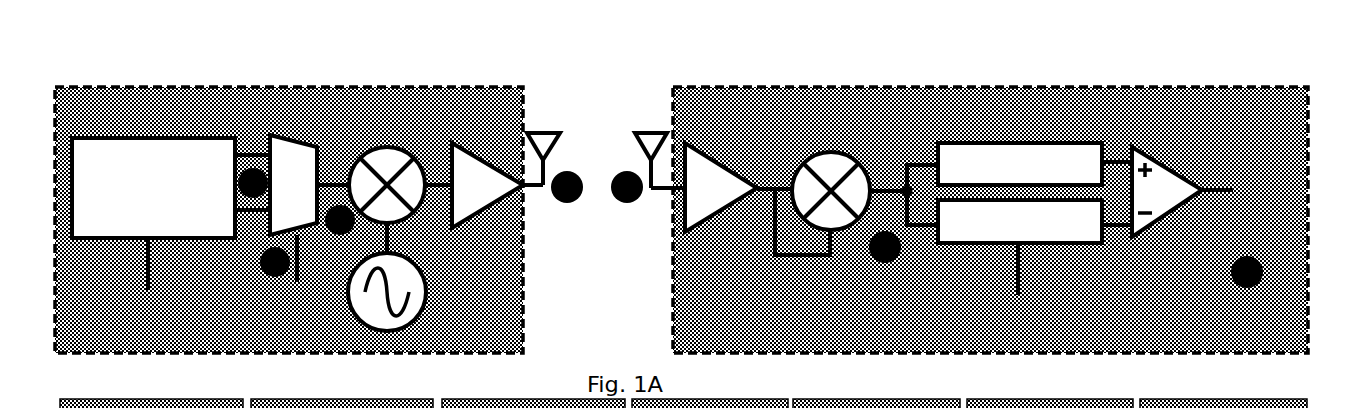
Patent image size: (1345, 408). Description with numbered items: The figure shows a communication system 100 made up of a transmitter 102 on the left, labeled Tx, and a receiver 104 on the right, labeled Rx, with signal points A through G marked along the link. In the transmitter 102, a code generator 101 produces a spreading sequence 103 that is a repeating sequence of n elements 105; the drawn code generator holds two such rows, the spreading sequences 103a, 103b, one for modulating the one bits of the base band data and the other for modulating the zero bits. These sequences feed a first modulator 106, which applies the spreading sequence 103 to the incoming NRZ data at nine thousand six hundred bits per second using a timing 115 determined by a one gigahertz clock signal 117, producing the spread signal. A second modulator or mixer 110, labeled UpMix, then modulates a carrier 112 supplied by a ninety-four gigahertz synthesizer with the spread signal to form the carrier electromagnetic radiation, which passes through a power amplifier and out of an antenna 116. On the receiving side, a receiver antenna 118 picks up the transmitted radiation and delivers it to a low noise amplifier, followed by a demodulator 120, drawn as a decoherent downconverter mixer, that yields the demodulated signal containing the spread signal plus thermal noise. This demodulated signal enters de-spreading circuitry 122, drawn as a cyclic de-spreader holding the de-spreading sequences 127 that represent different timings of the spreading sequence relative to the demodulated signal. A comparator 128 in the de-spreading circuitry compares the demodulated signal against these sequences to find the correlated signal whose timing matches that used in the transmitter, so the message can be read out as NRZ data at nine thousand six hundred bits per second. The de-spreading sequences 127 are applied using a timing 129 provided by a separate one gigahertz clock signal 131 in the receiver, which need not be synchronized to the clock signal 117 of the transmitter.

The communication system 100 is at (535, 63).
The code generator 101 is at (149, 185).
The transmitter 102 is at (250, 70).
The spreading sequence 103 is at (153, 175).
The first spreading sequence 103a is at (205, 172).
The second spreading sequence 103b is at (112, 225).
The receiver 104 is at (745, 67).
The elements 105 is at (151, 111).
The first modulator 106 is at (293, 185).
The mixer 110 is at (383, 202).
The carrier 112 is at (405, 330).
The timing 115 is at (155, 267).
The antenna 116 is at (547, 142).
The clock signal 117 is at (165, 324).
The receiver antenna 118 is at (650, 145).
The demodulator 120 is at (800, 173).
The de-spreading circuitry 122 is at (1012, 228).
The de-spreading sequences 127 is at (1077, 235).
The comparator 128 is at (1173, 165).
The timing 129 is at (1022, 277).
The clock signal 131 is at (1034, 327).